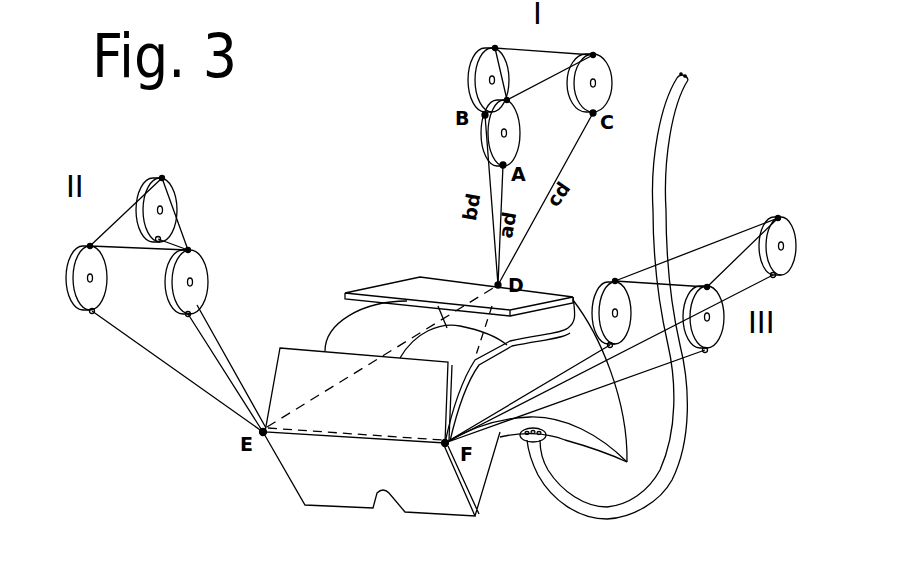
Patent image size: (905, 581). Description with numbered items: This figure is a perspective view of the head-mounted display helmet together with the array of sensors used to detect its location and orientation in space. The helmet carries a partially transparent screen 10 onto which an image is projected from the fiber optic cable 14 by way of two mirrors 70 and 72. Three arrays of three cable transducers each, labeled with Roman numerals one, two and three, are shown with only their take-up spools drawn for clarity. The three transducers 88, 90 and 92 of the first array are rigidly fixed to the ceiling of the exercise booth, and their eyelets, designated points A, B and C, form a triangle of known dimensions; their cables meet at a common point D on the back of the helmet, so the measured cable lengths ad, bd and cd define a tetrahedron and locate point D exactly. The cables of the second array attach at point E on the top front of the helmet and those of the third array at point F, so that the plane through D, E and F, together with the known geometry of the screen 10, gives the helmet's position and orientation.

The partially transparent screen 10 is at (337, 495).
The fiber optic cable 14 is at (683, 420).
The mirror 70 is at (404, 284).
The mirror 72 is at (300, 356).
The transducer 88 is at (520, 134).
The transducer 90 is at (475, 77).
The transducer 92 is at (612, 72).